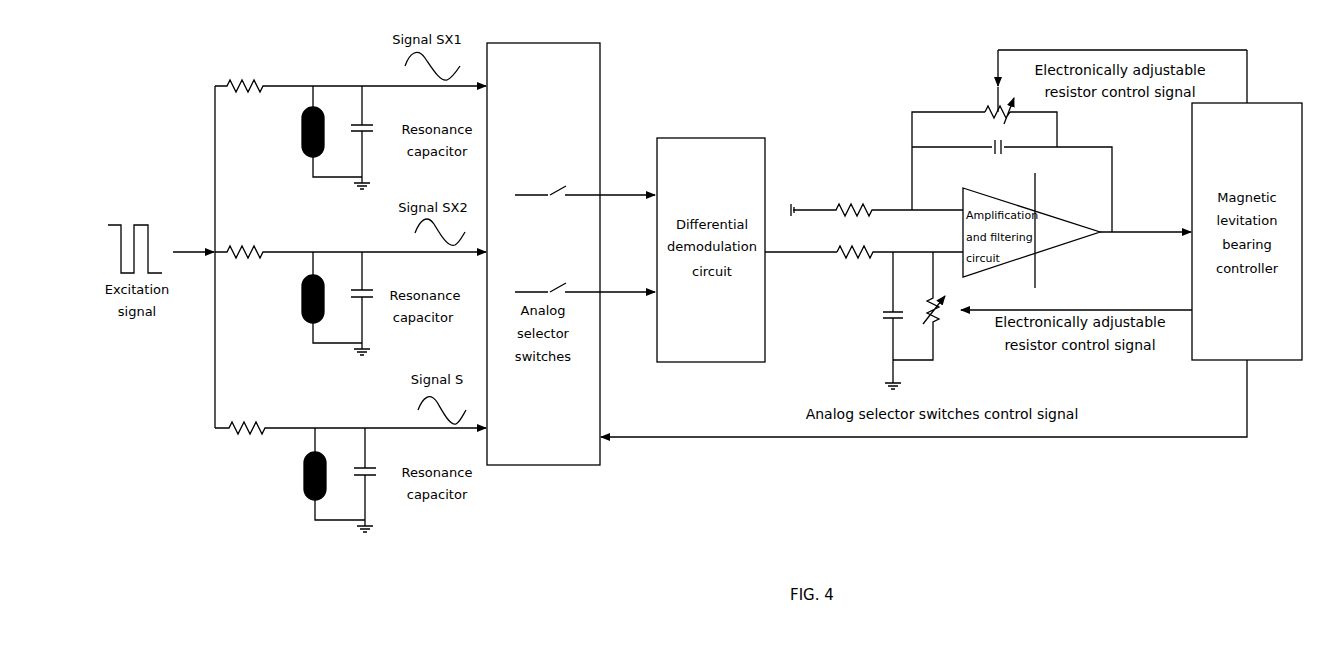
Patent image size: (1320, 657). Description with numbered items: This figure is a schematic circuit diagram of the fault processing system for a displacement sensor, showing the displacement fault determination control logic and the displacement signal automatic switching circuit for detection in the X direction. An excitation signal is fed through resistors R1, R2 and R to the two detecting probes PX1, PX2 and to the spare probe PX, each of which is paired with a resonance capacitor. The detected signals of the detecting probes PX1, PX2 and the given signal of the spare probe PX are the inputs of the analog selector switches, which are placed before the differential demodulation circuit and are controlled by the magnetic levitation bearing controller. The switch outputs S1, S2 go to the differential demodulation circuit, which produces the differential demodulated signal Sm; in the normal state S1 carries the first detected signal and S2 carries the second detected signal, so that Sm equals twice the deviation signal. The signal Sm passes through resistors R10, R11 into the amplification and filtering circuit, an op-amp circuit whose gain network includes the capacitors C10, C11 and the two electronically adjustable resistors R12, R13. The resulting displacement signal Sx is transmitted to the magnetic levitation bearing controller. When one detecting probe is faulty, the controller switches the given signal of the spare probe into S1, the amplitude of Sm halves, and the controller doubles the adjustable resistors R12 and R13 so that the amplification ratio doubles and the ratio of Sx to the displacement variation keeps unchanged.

The resistor R1 is at (350, 73).
The resistor R2 is at (350, 239).
The resistor R is at (350, 414).
The detecting probe PX1 is at (310, 131).
The detecting probe PX2 is at (313, 297).
The displacement sensor probe PX is at (318, 474).
The detected signal S1 is at (585, 186).
The detected signal S2 is at (585, 281).
The differential demodulated signal Sm is at (801, 243).
The displacement signal Sx is at (1145, 219).
The resistor R10 is at (877, 198).
The resistor R11 is at (900, 267).
The electronically adjustable resistor R12 is at (973, 101).
The electronically adjustable resistor R13 is at (928, 306).
The capacitor C10 is at (1000, 157).
The capacitor C11 is at (873, 320).